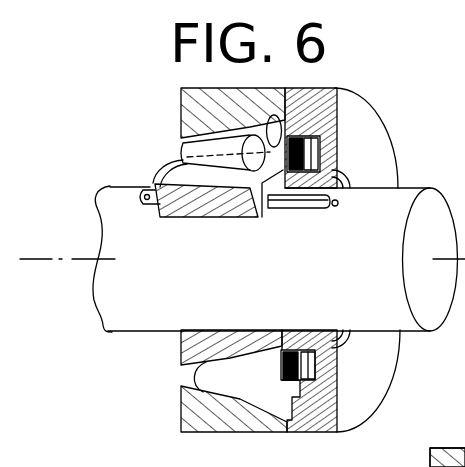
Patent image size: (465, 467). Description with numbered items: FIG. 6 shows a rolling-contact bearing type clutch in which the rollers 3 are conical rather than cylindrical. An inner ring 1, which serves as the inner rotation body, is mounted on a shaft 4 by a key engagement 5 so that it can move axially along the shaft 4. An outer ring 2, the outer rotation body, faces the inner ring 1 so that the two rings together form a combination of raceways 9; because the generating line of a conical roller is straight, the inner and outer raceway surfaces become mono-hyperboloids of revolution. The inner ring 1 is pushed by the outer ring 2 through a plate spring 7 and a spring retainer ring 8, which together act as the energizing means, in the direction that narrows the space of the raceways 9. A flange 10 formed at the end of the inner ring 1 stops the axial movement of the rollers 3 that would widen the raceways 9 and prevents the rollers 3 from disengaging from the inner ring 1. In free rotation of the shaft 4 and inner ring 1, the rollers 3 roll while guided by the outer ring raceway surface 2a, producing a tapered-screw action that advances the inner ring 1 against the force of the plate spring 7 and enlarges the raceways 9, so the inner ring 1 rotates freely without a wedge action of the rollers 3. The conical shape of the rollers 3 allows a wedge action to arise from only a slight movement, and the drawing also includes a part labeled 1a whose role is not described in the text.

The inner ring 1 is at (202, 215).
The inner ring (alternate) 1a is at (390, 460).
The outer ring 2 is at (181, 110).
The outer ring raceway surface 2a is at (417, 453).
The roller 3 is at (182, 152).
The shaft 4 is at (412, 188).
The key engagement 5 is at (302, 208).
The plate spring 7 is at (308, 121).
The spring retainer ring 8 is at (334, 138).
The raceways 9 is at (198, 371).
The flange 10 is at (152, 183).